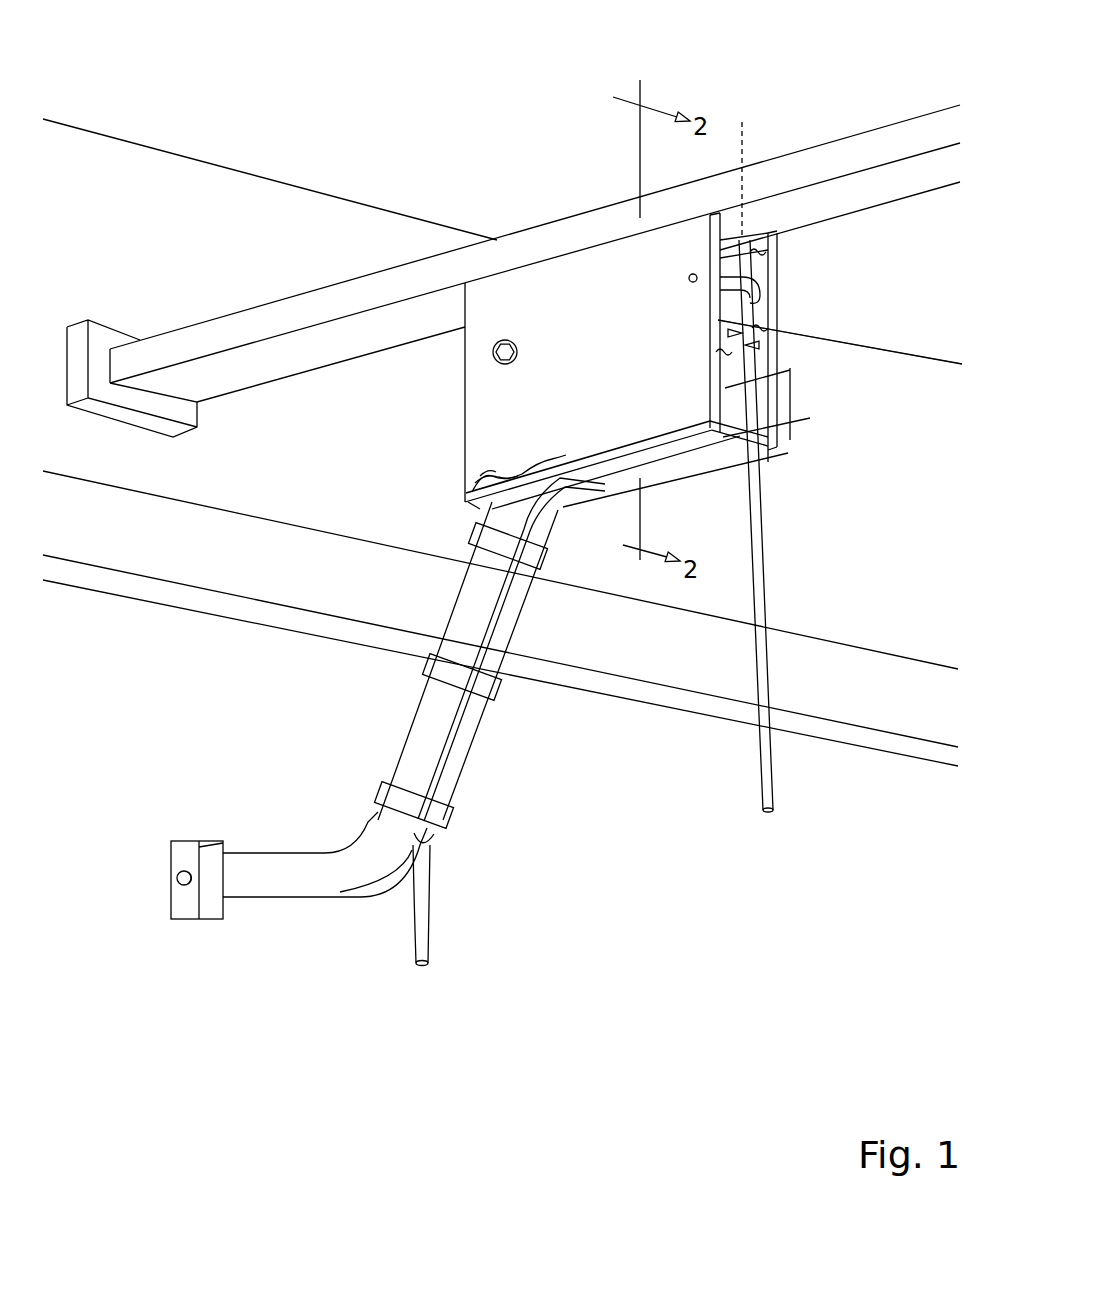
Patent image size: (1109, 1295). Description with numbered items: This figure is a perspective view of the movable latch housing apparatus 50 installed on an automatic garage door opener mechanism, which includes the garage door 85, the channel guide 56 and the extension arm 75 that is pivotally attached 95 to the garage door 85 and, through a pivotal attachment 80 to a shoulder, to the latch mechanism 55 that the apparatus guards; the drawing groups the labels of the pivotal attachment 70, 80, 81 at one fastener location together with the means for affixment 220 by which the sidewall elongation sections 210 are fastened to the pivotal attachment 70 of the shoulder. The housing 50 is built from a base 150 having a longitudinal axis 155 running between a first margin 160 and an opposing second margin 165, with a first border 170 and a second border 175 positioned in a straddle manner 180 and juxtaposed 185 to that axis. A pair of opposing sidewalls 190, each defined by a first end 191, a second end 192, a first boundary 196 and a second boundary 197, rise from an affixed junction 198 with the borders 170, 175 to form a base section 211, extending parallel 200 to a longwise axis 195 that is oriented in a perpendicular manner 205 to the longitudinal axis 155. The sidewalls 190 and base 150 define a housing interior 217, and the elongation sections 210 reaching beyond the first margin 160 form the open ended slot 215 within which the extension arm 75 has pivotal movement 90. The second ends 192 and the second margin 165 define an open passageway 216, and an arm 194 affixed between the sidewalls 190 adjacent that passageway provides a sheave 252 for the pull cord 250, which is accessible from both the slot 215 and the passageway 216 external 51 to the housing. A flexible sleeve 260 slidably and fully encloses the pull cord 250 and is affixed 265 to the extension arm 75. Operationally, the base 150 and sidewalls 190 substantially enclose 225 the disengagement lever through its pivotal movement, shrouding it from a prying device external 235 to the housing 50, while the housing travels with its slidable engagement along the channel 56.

The movable latch housing apparatus 50 is at (896, 235).
The external 51 is at (957, 484).
The latch mechanism 55 is at (459, 122).
The channel guide 56 is at (880, 128).
The pivotal attachment 70 is at (403, 371).
The extension arm 75 is at (396, 765).
The pivotal attachment 80 is at (403, 371).
The bolt head 81 is at (403, 371).
The garage door 85 is at (133, 707).
The pivotal movement 90 is at (380, 575).
The pivotal attachment 95 is at (178, 879).
The base 150 is at (758, 505).
The longitudinal axis 155 is at (813, 422).
The first margin 160 is at (580, 507).
The second margin 165 is at (772, 450).
The first border 170 is at (560, 472).
The second border 175 is at (757, 547).
The straddle manner 180 is at (825, 595).
The juxtapose 185 is at (752, 597).
The sidewalls 190 is at (706, 238).
The first end 191 is at (465, 443).
The second end 192 is at (722, 222).
The arm 194 is at (778, 278).
The longwise axis 195 is at (743, 142).
The first boundary 196 is at (575, 518).
The second boundary 197 is at (480, 277).
The affixed junction 198 is at (660, 487).
The parallel 200 is at (792, 303).
The perpendicular manner 205 is at (790, 395).
The elongation section 210 is at (465, 463).
The base section 211 is at (707, 427).
The open ended slot 215 is at (485, 500).
The open passageway 216 is at (882, 358).
The housing interior 217 is at (714, 343).
The means for affixment 220 is at (492, 350).
The substantially enclose 225 is at (339, 234).
The external 235 is at (948, 544).
The pull cord 250 is at (777, 784).
The sheave 252 is at (777, 270).
The flexible sleeve 260 is at (467, 760).
The affixed 265 is at (470, 523).